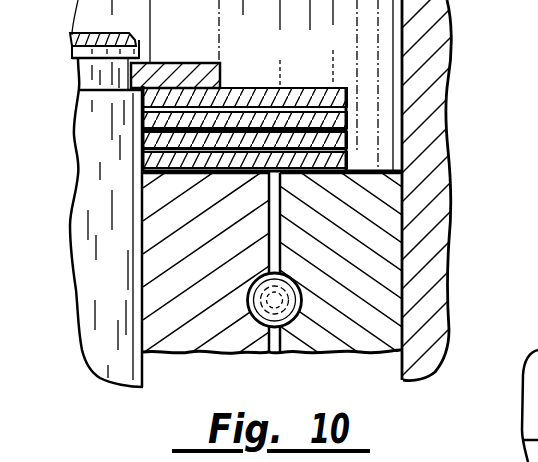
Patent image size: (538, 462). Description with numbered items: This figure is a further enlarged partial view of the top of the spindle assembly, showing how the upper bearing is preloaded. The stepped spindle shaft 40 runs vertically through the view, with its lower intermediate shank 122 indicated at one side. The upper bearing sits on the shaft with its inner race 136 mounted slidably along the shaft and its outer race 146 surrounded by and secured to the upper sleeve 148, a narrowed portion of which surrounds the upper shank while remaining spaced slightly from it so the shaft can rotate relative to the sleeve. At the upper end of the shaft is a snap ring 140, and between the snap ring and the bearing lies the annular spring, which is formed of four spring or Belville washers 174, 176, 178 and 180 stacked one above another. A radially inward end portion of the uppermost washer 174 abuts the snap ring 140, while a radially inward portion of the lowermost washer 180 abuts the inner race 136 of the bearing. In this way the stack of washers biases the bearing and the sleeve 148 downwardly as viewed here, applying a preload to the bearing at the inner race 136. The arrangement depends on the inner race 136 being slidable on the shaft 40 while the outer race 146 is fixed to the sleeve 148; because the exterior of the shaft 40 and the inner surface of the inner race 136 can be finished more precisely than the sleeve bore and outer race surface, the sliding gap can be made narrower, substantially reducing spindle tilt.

The spindle shaft 40 is at (110, 186).
The lower intermediate shank 122 is at (537, 366).
The inner race 136 is at (228, 340).
The snap ring 140 is at (172, 62).
The outer race 146 is at (323, 337).
The upper sleeve 148 is at (432, 262).
The Belville washer 174 is at (235, 88).
The Belville washer 176 is at (298, 118).
The Belville washer 178 is at (347, 143).
The Belville washer 180 is at (347, 152).